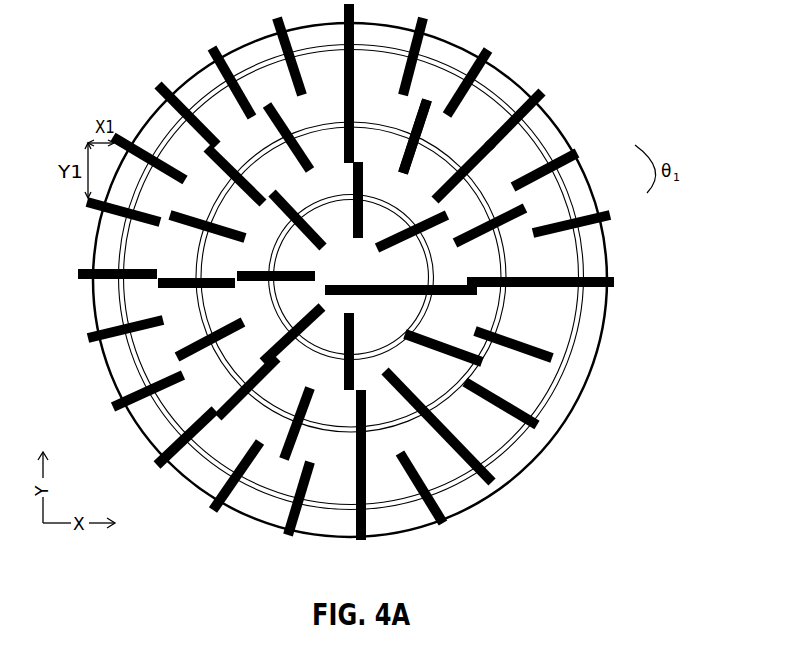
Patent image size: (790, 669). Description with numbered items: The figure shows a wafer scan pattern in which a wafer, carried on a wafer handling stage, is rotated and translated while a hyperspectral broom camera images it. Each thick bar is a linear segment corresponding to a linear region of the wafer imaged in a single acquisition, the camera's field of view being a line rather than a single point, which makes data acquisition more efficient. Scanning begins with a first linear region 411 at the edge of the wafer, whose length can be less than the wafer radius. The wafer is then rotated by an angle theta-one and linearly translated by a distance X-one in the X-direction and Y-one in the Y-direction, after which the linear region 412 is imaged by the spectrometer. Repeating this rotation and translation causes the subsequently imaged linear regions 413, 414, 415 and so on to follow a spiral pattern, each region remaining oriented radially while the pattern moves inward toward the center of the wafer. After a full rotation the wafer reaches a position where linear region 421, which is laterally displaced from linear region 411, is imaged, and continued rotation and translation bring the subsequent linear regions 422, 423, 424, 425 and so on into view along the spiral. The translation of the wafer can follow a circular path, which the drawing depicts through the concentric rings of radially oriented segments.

The first linear region 411 is at (562, 283).
The linear region 412 is at (591, 217).
The linear region 413 is at (565, 161).
The linear region 414 is at (532, 109).
The linear region 415 is at (477, 69).
The linear region 421 is at (432, 272).
The linear region 422 is at (490, 216).
The linear region 423 is at (463, 168).
The linear region 424 is at (404, 136).
The linear region 425 is at (334, 168).